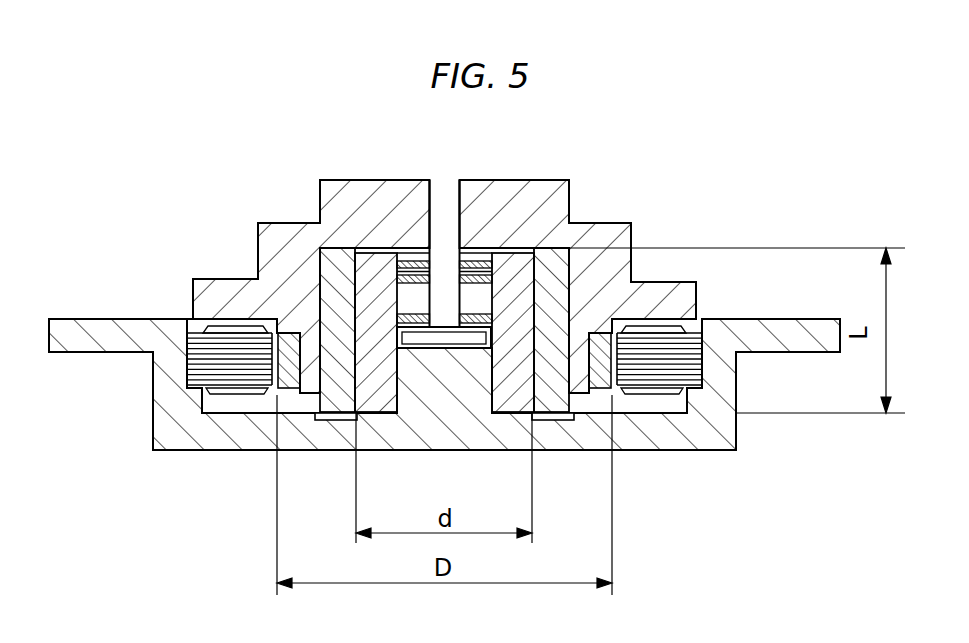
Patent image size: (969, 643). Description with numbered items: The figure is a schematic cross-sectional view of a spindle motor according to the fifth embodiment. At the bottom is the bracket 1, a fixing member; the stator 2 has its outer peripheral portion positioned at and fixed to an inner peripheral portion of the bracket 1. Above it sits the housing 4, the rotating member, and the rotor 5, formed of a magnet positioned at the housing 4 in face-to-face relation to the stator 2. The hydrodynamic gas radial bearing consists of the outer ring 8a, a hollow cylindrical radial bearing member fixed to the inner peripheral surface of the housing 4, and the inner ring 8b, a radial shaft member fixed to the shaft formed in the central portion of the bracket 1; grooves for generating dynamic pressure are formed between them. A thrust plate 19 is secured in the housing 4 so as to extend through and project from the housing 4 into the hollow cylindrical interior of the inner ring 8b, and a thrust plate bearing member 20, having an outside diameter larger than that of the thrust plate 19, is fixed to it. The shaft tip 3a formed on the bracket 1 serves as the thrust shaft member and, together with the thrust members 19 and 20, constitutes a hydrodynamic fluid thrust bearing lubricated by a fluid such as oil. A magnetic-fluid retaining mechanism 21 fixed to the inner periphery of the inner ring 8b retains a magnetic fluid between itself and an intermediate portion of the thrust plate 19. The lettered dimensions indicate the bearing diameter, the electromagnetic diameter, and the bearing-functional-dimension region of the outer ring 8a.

The bracket 1 is at (788, 345).
The stator 2 is at (221, 372).
The shaft tip 3a is at (427, 385).
The housing 4 is at (509, 194).
The rotor 5 is at (295, 372).
The outer ring 8a is at (345, 395).
The inner ring 8b is at (383, 398).
The thrust plate 19 is at (444, 190).
The thrust plate bearing member 20 is at (410, 279).
The magnetic-fluid retaining mechanism 21 is at (418, 332).